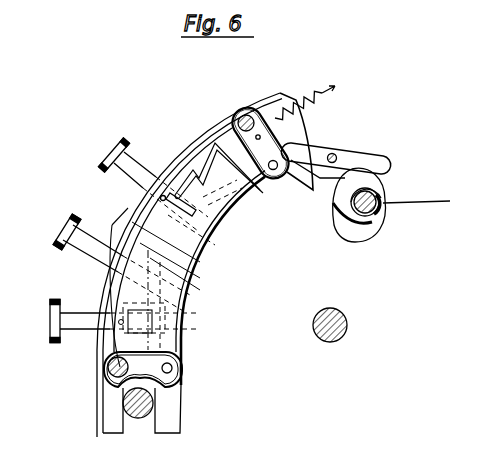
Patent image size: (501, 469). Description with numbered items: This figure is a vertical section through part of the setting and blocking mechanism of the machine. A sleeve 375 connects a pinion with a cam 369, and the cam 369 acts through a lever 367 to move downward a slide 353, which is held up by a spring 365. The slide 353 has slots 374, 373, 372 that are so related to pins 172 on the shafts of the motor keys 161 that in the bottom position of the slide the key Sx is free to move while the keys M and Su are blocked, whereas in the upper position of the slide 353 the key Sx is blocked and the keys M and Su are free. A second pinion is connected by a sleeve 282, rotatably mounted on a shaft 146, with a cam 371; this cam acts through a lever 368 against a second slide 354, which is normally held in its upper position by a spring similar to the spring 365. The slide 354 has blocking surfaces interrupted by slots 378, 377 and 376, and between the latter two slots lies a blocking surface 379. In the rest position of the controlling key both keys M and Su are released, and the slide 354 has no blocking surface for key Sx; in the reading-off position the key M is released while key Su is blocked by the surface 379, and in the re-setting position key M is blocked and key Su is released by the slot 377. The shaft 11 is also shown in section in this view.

The shaft 11 is at (347, 323).
The shaft 146 is at (383, 197).
The motor keys 161 is at (55, 300).
The pins 172 is at (125, 252).
The sleeve 282 is at (431, 201).
The slide 353 is at (258, 182).
The slide 354 is at (189, 172).
The spring 365 is at (302, 100).
The lever 367 is at (355, 157).
The lever 368 is at (318, 142).
The cam 369 is at (367, 205).
The cam 371 is at (350, 233).
The slot 372 is at (112, 313).
The slot 373 is at (150, 262).
The slot 374 is at (205, 205).
The sleeve 375 is at (385, 213).
The slot 376 is at (160, 250).
The slot 377 is at (135, 225).
The slot 378 is at (177, 200).
The blocking surface 379 is at (160, 199).